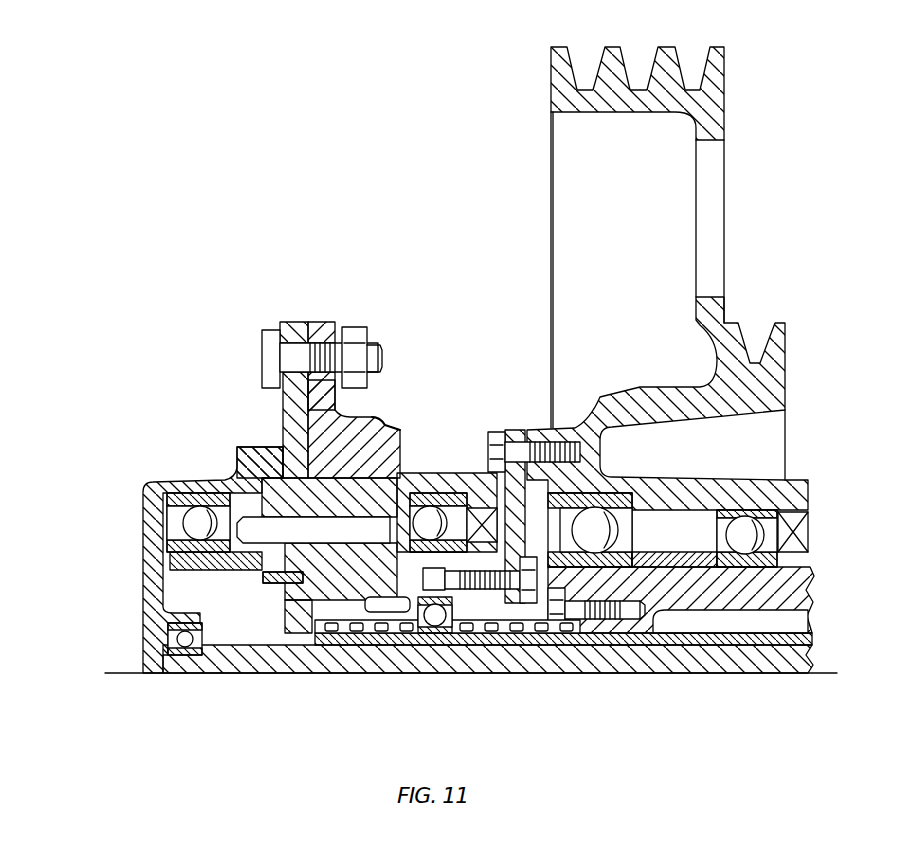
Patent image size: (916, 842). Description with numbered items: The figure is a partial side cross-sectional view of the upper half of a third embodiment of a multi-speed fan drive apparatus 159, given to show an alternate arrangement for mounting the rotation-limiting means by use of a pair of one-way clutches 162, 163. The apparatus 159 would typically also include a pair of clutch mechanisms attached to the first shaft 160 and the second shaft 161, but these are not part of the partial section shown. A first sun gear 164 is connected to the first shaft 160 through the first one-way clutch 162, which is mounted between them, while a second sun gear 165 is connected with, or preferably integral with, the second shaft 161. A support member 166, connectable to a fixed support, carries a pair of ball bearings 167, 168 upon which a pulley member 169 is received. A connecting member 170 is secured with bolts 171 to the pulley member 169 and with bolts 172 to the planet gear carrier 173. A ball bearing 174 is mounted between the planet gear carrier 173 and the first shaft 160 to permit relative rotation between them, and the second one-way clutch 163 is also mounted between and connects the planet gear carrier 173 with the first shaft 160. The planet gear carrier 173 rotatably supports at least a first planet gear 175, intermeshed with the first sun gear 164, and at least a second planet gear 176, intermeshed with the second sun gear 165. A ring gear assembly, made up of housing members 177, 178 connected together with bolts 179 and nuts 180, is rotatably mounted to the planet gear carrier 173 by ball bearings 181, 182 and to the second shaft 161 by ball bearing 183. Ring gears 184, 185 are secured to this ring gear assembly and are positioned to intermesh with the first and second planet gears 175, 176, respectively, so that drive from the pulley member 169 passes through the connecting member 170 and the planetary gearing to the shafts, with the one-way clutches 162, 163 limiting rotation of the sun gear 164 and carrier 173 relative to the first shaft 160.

The multi-speed drive apparatus 159 is at (130, 358).
The first shaft 160 is at (740, 640).
The second shaft 161 is at (713, 667).
The first one-way clutch 162 is at (355, 633).
The one-way clutch 163 is at (560, 620).
The first sun gear 164 is at (375, 612).
The second sun gear 165 is at (263, 582).
The support member 166 is at (737, 593).
The ball bearing 167 is at (597, 530).
The ball bearing 168 is at (785, 488).
The pulley member 169 is at (775, 368).
The connecting member 170 is at (515, 430).
The bolts 171 is at (493, 435).
The bolts 172 is at (493, 590).
The planet gear carrier 173 is at (408, 460).
The ball bearing 174 is at (436, 626).
The first planet gear 175 is at (400, 445).
The second planet gear 176 is at (227, 470).
The housing member 177 is at (322, 325).
The housing member 178 is at (293, 322).
The bolts 179 is at (275, 354).
The nuts 180 is at (350, 337).
The ball bearing 181 is at (427, 517).
The ball bearing 182 is at (195, 523).
The ball bearing 183 is at (183, 642).
The ring gear 184 is at (380, 428).
The ring gear 185 is at (250, 460).